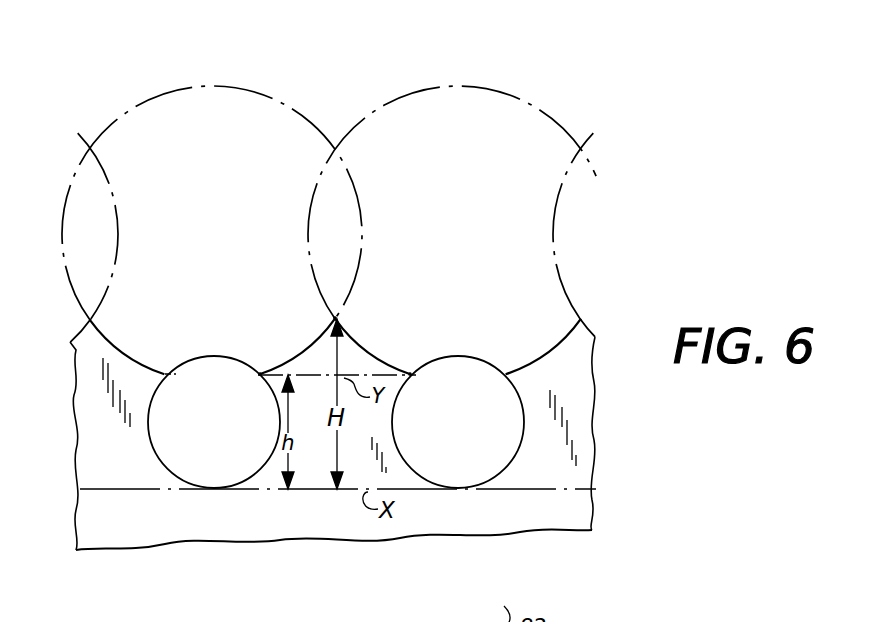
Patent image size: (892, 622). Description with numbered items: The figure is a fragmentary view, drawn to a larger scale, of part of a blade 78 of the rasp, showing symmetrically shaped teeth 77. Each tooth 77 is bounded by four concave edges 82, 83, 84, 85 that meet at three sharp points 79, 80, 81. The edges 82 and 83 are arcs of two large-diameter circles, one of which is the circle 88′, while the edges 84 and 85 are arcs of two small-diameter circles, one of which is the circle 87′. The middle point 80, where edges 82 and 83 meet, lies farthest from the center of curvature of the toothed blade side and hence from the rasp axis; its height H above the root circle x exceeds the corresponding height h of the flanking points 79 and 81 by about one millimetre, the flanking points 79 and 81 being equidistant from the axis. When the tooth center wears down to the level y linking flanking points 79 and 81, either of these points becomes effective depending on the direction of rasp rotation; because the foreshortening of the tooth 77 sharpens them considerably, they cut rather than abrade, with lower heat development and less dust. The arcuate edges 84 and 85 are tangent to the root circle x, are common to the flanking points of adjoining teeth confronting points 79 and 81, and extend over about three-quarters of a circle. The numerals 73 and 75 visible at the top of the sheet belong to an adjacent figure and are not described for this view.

The first sphere (dash-dot outline) 88′ is at (172, 97).
The middle point 80 is at (337, 312).
The concave edge 82 is at (318, 343).
The concave edge 83 is at (354, 343).
The flanking point 79 is at (261, 373).
The flanking point 81 is at (411, 373).
The small-diameter circle 87′ is at (204, 359).
The arcuate edge 84 is at (279, 413).
The arcuate edge 85 is at (396, 432).
The tooth 77 is at (305, 463).
The blade 78 is at (410, 519).
The element of adjacent figure 73 is at (672, 13).
The element of adjacent figure 75 is at (850, 12).